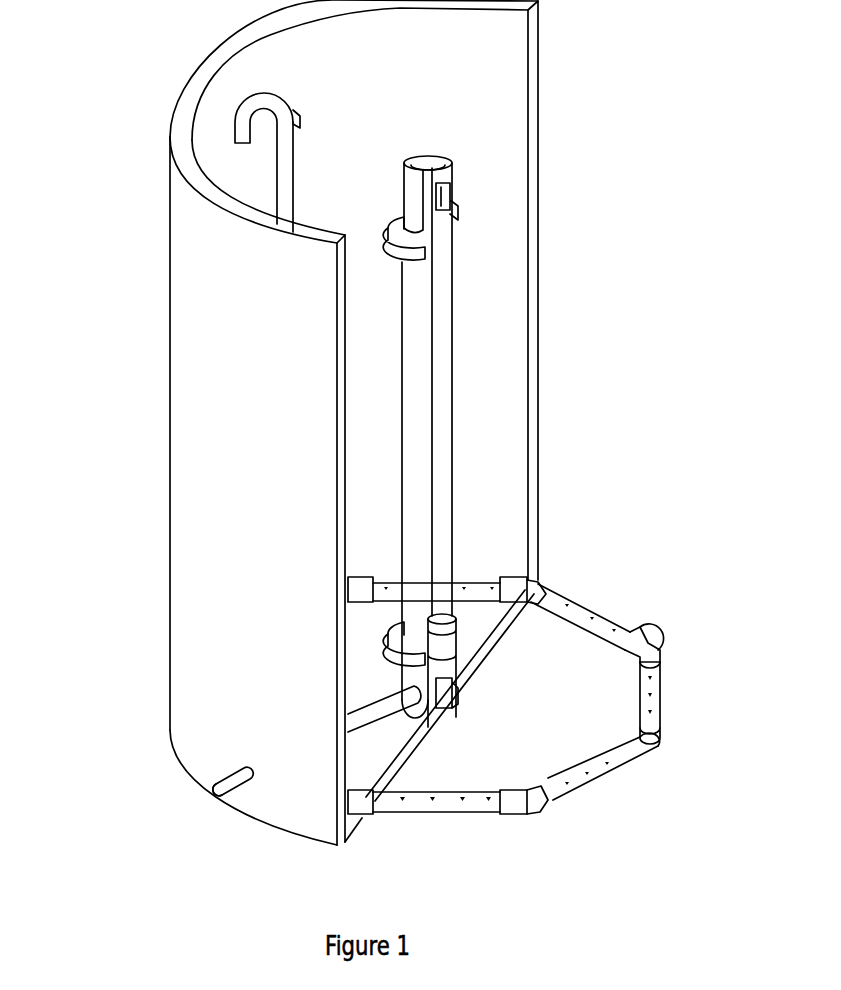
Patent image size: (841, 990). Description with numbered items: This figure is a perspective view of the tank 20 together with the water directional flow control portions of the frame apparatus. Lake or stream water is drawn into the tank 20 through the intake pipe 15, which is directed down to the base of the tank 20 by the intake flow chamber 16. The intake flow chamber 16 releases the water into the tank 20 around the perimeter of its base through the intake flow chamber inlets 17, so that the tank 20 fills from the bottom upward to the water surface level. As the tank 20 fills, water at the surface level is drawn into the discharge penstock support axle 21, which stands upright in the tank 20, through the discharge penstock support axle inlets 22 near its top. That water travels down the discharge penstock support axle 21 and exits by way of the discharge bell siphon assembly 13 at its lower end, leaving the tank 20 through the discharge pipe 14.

The discharge bell siphon assembly 13 is at (448, 642).
The discharge pipe 14 is at (220, 787).
The intake pipe 15 is at (240, 127).
The intake flow chamber 16 is at (472, 805).
The intake flow chamber inlets 17 is at (603, 757).
The tank 20 is at (192, 455).
The discharge penstock support axle 21 is at (447, 417).
The discharge penstock support axle inlets 22 is at (447, 203).